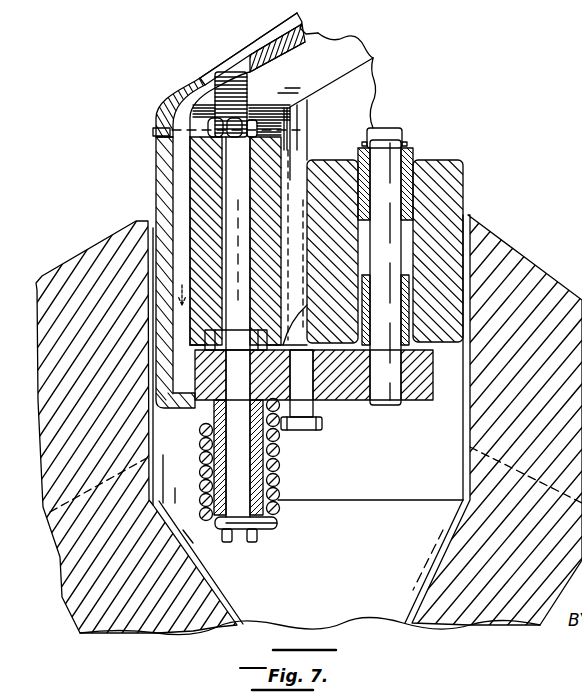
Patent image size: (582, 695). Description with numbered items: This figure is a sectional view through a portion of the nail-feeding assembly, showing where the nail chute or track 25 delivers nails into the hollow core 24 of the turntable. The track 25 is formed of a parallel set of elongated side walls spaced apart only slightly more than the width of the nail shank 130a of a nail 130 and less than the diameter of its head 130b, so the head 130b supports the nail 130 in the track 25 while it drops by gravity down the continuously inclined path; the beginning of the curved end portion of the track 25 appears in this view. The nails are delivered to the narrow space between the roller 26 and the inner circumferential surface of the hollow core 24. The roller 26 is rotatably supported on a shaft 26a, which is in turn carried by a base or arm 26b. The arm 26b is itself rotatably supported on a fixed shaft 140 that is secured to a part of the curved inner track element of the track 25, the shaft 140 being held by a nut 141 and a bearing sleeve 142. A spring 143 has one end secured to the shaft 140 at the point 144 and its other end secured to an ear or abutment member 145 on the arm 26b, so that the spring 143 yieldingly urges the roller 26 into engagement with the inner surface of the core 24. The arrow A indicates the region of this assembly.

The hollow core 24 is at (473, 423).
The nail chute or track 25 is at (258, 40).
The roller 26 is at (463, 181).
The shaft 26a is at (390, 127).
The base or arm 26b is at (358, 397).
The nail 130 is at (173, 185).
The nail shank 130a is at (173, 218).
The head 130b is at (160, 128).
The fixed shaft 140 is at (277, 522).
The nut 141 is at (280, 125).
The bearing sleeve 142 is at (208, 413).
The spring 143 is at (273, 463).
The spring end securing point 144 is at (241, 529).
The ear or abutment member 145 is at (303, 427).
The assembly A is at (556, 251).